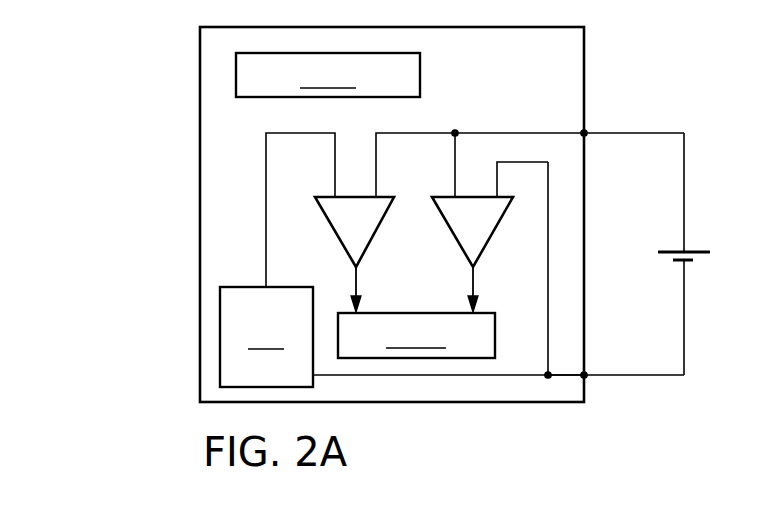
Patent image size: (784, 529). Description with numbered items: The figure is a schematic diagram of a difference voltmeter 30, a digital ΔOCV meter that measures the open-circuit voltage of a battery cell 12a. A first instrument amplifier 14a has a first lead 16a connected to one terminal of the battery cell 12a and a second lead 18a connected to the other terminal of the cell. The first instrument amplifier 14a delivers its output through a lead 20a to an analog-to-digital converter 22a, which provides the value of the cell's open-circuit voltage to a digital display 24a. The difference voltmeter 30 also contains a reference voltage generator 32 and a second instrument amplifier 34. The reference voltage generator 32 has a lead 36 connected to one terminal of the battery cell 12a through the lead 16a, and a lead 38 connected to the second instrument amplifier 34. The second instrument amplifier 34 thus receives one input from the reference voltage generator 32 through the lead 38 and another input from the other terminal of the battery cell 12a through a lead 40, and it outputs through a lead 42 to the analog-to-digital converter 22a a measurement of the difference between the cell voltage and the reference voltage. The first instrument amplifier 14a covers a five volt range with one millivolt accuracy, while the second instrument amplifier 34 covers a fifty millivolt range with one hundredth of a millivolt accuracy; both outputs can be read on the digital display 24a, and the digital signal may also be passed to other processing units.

The difference voltmeter 30 is at (614, 58).
The digital display 24a is at (328, 75).
The lead 38 is at (292, 133).
The second instrument amplifier 34 is at (316, 197).
The lead 40 is at (432, 133).
The second lead 18a is at (456, 170).
The first instrument amplifier 14a is at (503, 222).
The battery cell 12a is at (700, 248).
The first lead 16a is at (548, 292).
The lead 42 is at (357, 278).
The lead 20a is at (478, 285).
The reference voltage generator 32 is at (266, 337).
The analog-to-digital converter 22a is at (416, 335).
The lead 36 is at (485, 377).